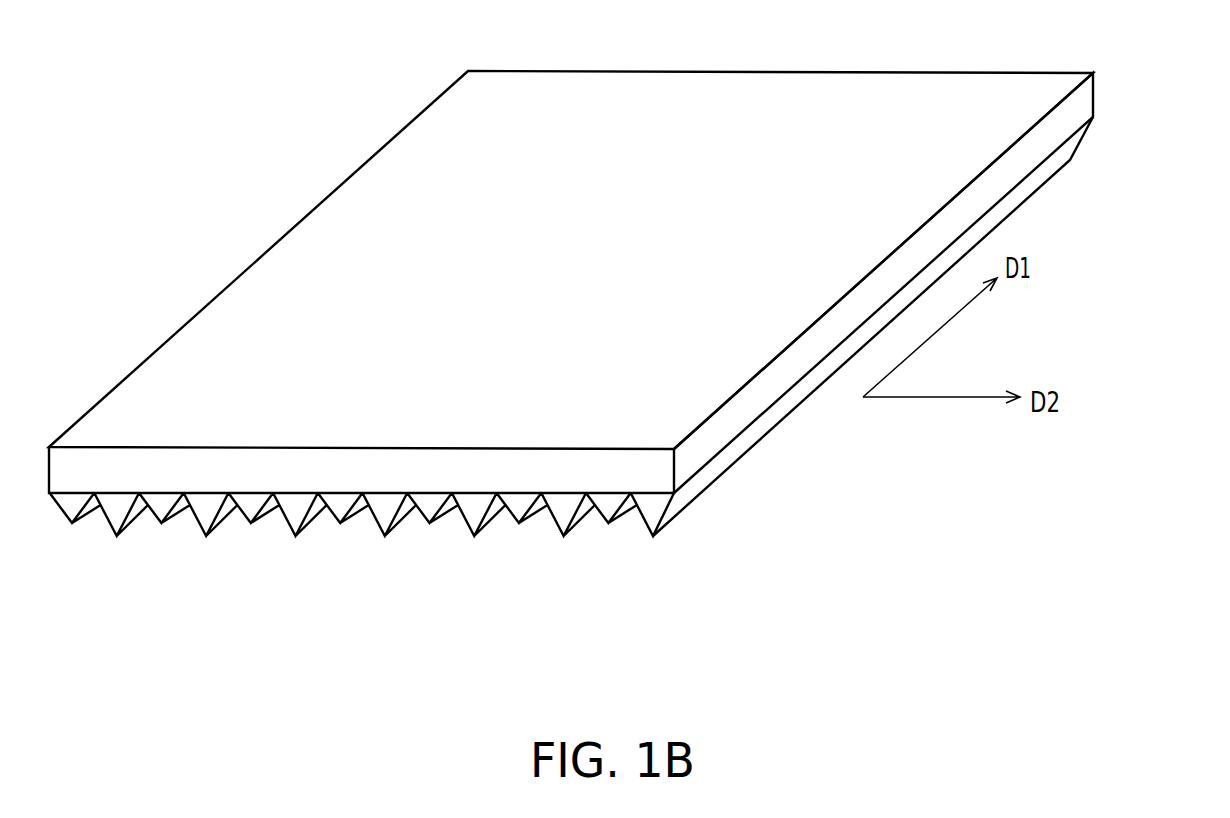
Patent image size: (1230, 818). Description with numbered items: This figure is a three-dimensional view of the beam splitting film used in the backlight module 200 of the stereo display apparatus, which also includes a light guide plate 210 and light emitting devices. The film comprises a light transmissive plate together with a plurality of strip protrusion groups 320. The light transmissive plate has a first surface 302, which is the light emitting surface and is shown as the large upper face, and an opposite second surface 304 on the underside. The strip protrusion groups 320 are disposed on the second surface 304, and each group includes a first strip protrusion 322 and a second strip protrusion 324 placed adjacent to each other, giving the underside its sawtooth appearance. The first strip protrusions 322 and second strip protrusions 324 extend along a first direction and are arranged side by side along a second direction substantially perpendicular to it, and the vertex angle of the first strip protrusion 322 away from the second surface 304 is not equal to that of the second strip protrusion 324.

The backlight module 200 is at (1137, 601).
The first surface 302 is at (843, 82).
The light guide plate 210 is at (1075, 109).
The second surface 304 is at (520, 503).
The strip protrusion groups 320 is at (690, 592).
The first strip protrusion 322 is at (603, 508).
The second strip protrusion 324 is at (653, 507).